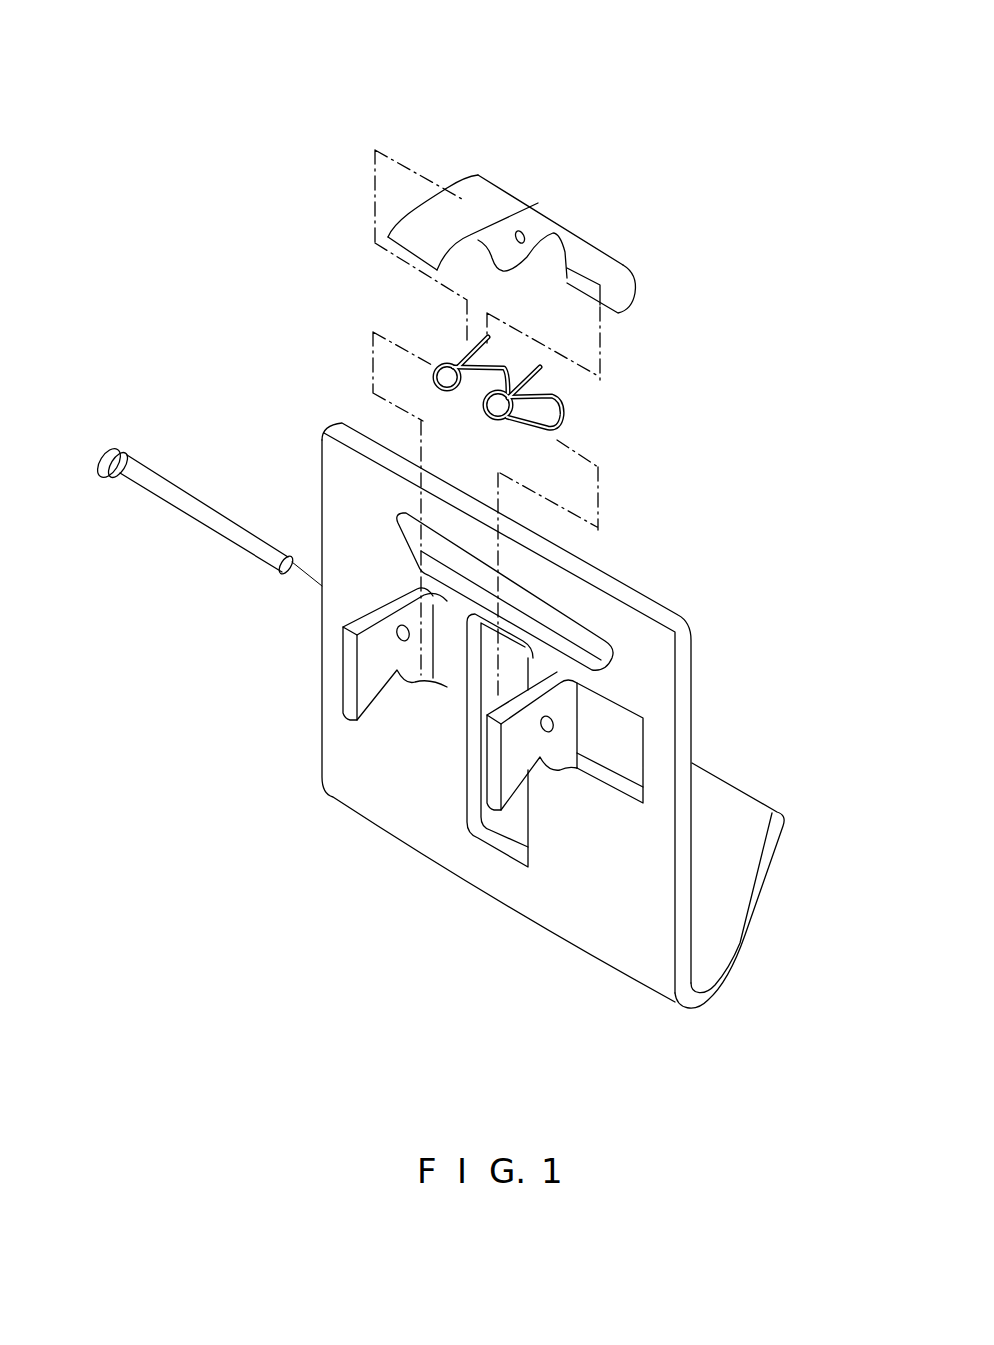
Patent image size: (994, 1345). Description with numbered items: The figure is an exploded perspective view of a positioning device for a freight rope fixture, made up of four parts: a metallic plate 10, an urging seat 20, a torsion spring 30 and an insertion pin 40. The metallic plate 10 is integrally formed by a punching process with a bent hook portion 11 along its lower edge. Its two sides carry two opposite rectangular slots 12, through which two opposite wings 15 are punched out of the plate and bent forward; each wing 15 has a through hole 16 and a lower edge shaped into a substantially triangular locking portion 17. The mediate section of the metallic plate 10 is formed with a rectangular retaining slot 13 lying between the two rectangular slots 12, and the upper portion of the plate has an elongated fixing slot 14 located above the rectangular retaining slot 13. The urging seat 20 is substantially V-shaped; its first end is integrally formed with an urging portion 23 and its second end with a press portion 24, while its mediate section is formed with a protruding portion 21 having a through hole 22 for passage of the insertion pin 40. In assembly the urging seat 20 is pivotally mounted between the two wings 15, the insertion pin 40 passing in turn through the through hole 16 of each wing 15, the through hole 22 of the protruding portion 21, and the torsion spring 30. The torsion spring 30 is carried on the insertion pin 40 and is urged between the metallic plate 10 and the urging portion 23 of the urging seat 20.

The metallic plate 10 is at (281, 414).
The bent hook portion 11 is at (735, 888).
The rectangular slots 12 is at (612, 745).
The rectangular retaining slot 13 is at (508, 828).
The elongated fixing slot 14 is at (543, 607).
The wings 15 is at (378, 652).
The through hole 16 is at (553, 722).
The locking portion 17 is at (397, 670).
The urging seat 20 is at (552, 164).
The protruding portion 21 is at (507, 190).
The through hole 22 is at (526, 231).
The urging portion 23 is at (622, 282).
The press portion 24 is at (432, 230).
The torsion spring 30 is at (610, 422).
The insertion pin 40 is at (177, 445).